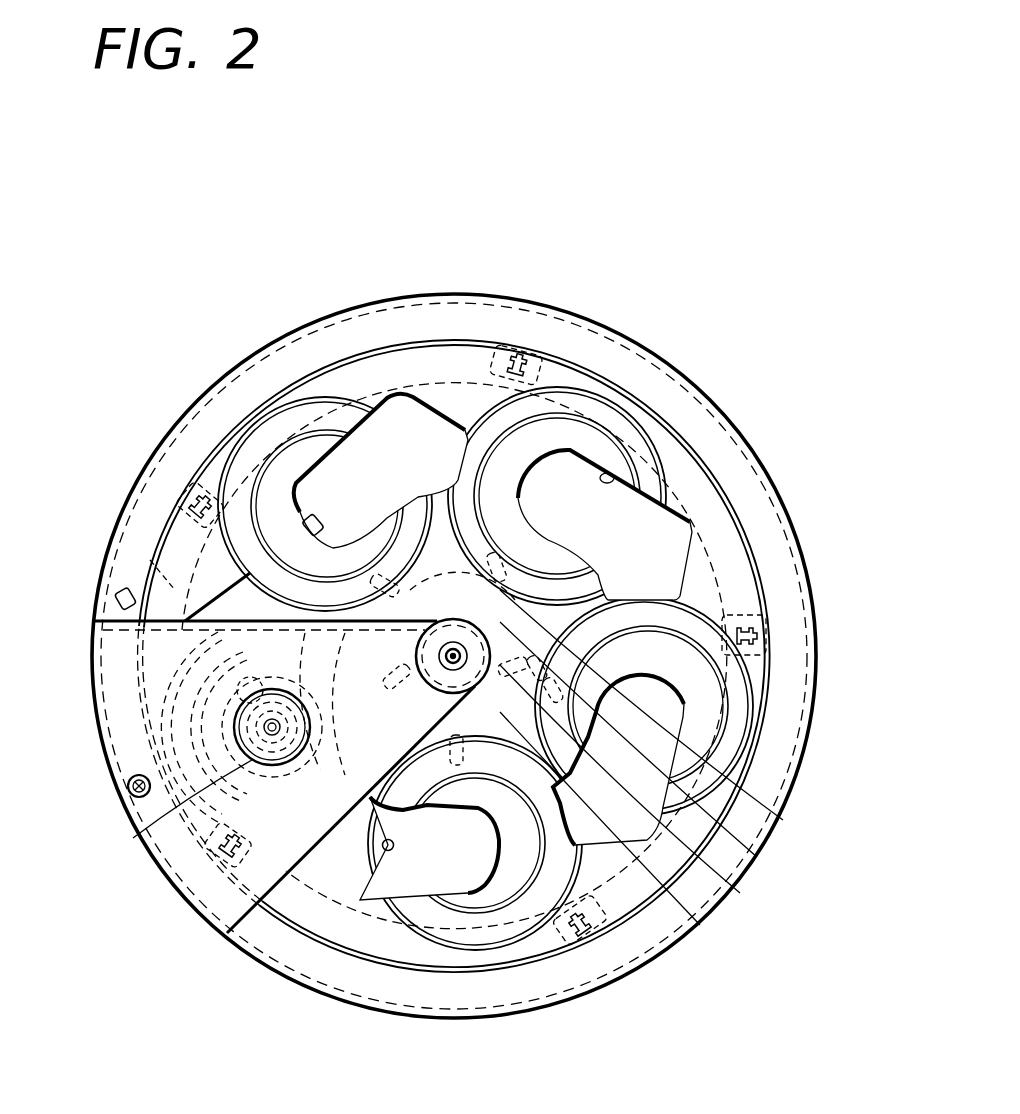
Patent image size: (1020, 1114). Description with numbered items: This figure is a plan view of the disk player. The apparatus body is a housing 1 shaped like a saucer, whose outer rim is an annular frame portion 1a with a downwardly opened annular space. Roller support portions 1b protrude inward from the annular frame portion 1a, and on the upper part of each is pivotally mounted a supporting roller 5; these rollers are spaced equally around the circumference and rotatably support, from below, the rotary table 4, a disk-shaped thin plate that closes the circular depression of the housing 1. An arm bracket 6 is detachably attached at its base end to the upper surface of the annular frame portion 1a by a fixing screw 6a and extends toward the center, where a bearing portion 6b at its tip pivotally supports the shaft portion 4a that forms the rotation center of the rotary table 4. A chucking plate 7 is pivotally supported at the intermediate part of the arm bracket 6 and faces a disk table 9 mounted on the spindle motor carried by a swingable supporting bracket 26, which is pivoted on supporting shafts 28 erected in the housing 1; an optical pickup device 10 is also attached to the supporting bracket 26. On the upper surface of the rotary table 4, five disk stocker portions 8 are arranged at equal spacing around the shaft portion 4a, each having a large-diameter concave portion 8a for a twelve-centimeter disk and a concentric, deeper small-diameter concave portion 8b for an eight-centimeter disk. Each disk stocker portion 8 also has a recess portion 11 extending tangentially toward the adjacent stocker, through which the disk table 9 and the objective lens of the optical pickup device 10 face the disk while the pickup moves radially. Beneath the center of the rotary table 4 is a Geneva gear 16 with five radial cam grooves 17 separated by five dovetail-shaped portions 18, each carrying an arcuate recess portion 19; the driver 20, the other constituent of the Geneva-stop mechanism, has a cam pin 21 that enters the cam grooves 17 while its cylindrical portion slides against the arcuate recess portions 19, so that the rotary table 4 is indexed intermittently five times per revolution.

The housing 1 is at (403, 295).
The annular frame portion 1a is at (358, 325).
The roller support portion 1b is at (490, 362).
The rotary table 4 is at (343, 378).
The shaft portion 4a is at (526, 642).
The supporting roller 5 is at (508, 365).
The arm bracket 6 is at (96, 662).
The fixing screw 6a is at (130, 792).
The bearing portion 6b is at (455, 655).
The chucking plate 7 is at (272, 765).
The disk stocker portion 8 is at (485, 667).
The large-diameter concave portion 8a is at (567, 388).
The small-diameter concave portion 8b is at (598, 438).
The disk table 9 is at (250, 757).
The optical pickup device 10 is at (145, 830).
The recess portion 11 is at (610, 470).
The Geneva gear 16 is at (783, 820).
The cam groove 17 is at (757, 857).
The dovetail-shaped portion 18 is at (740, 893).
The arcuate recess portion 19 is at (700, 925).
The driver 20 is at (348, 797).
The cam pin 21 is at (388, 850).
The supporting bracket 26 is at (165, 578).
The supporting shaft 28 is at (308, 518).